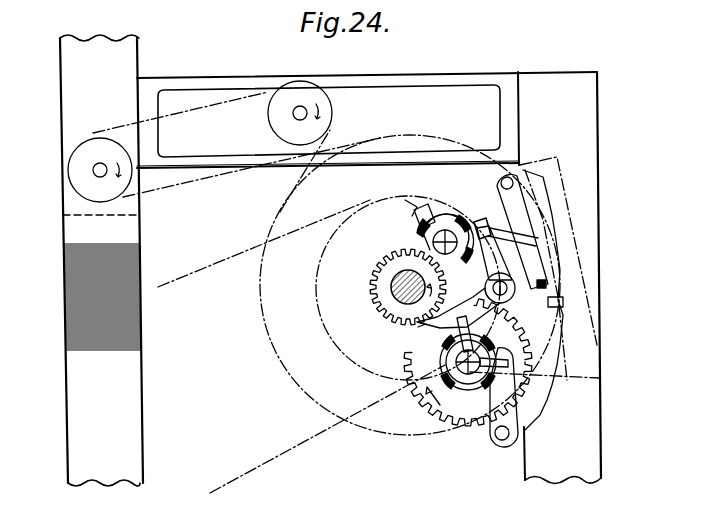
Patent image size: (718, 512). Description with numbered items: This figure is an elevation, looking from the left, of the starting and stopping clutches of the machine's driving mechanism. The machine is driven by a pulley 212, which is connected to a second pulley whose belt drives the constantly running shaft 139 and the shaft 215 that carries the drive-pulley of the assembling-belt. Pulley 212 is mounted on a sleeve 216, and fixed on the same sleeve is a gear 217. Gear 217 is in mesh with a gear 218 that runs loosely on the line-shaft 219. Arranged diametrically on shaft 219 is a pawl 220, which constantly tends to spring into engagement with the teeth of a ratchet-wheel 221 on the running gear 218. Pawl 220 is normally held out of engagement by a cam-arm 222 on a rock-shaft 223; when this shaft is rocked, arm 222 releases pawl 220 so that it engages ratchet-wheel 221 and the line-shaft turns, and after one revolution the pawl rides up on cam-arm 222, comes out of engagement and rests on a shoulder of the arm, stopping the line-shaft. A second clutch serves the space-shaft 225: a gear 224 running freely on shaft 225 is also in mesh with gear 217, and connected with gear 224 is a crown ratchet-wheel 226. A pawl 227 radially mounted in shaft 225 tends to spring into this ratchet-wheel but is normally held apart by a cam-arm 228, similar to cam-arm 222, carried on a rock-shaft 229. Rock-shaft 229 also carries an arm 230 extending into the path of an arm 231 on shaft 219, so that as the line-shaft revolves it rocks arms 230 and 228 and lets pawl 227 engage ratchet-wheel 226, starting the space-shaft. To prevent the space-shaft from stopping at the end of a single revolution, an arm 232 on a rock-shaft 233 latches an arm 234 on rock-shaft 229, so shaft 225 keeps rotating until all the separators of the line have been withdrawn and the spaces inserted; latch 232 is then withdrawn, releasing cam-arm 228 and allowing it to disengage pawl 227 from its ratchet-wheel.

The running-shaft 139 is at (93, 170).
The shaft 215 is at (307, 113).
The pulley 212 is at (313, 307).
The sleeve 216 is at (390, 290).
The gear 217 is at (388, 263).
The gear 218 is at (520, 347).
The line-shaft 219 is at (455, 395).
The pawl 220 is at (512, 365).
The ratchet-wheel 221 is at (427, 388).
The cam-arm 222 is at (545, 412).
The rock-shaft 223 is at (502, 440).
The gear 224 is at (427, 241).
The space-shaft 225 is at (409, 202).
The crown ratchet-wheel 226 is at (475, 188).
The pawl 227 is at (487, 232).
The cam-arm 228 is at (500, 258).
The rock-shaft 229 is at (515, 293).
The arm 230 is at (507, 304).
The arm 231 is at (418, 327).
The arm 232 is at (525, 218).
The rock-shaft 233 is at (513, 183).
The arm 234 is at (555, 303).